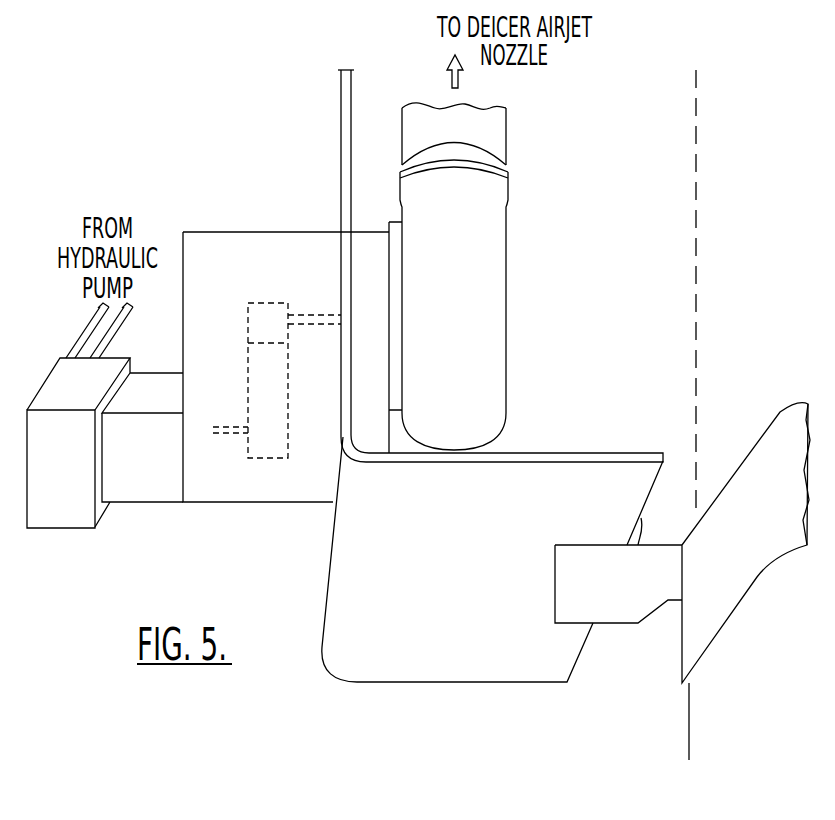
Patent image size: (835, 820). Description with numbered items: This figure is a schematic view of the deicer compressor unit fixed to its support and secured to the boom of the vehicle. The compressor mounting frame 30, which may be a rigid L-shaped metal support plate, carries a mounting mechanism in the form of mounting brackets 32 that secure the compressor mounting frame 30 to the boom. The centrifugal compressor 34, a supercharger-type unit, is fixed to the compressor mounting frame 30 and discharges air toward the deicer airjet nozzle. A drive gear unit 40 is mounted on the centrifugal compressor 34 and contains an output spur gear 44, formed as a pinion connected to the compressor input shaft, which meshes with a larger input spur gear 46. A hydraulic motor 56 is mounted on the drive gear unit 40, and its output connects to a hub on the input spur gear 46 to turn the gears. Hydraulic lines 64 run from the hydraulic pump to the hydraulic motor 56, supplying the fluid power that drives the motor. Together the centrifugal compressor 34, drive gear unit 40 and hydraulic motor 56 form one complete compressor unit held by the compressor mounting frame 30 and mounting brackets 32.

The compressor mounting frame 30 is at (472, 668).
The mounting brackets 32 is at (743, 580).
The centrifugal compressor 34 is at (487, 270).
The drive gear unit 40 is at (330, 245).
The output spur gear 44 is at (268, 314).
The input spur gear 46 is at (275, 448).
The hydraulic motor 56 is at (60, 520).
The hydraulic lines 64 is at (80, 330).